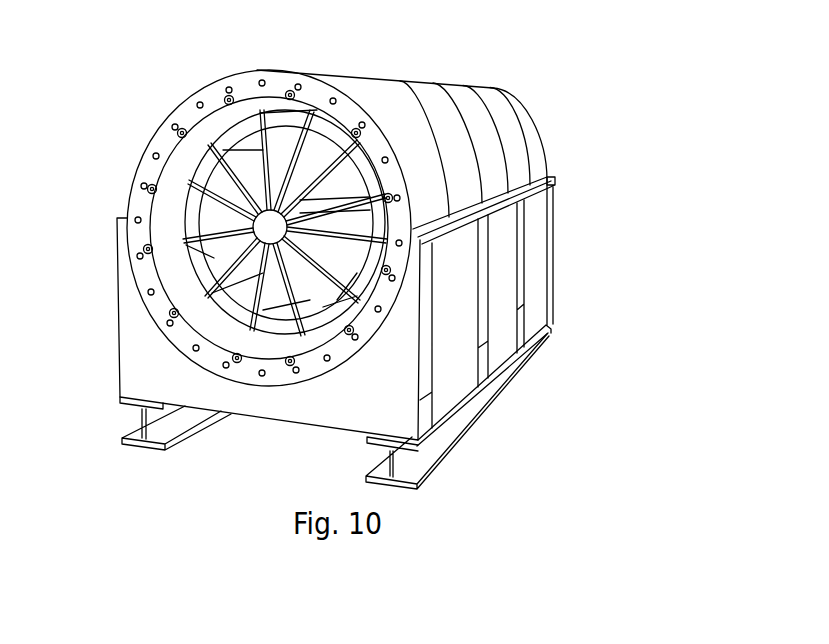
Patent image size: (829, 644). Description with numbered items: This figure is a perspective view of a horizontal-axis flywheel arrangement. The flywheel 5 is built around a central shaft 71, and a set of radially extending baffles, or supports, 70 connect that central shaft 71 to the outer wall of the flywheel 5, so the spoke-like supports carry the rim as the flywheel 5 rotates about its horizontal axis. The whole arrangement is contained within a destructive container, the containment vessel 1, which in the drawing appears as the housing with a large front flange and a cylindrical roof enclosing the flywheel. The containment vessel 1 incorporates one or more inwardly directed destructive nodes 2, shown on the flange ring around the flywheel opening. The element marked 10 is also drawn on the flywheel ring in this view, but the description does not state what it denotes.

The containment vessel 1 is at (183, 107).
The destructive node 2 is at (227, 96).
The flywheel 5 is at (237, 208).
The rotor ring 10 is at (208, 163).
The baffles 70 is at (205, 213).
The central shaft 71 is at (257, 223).